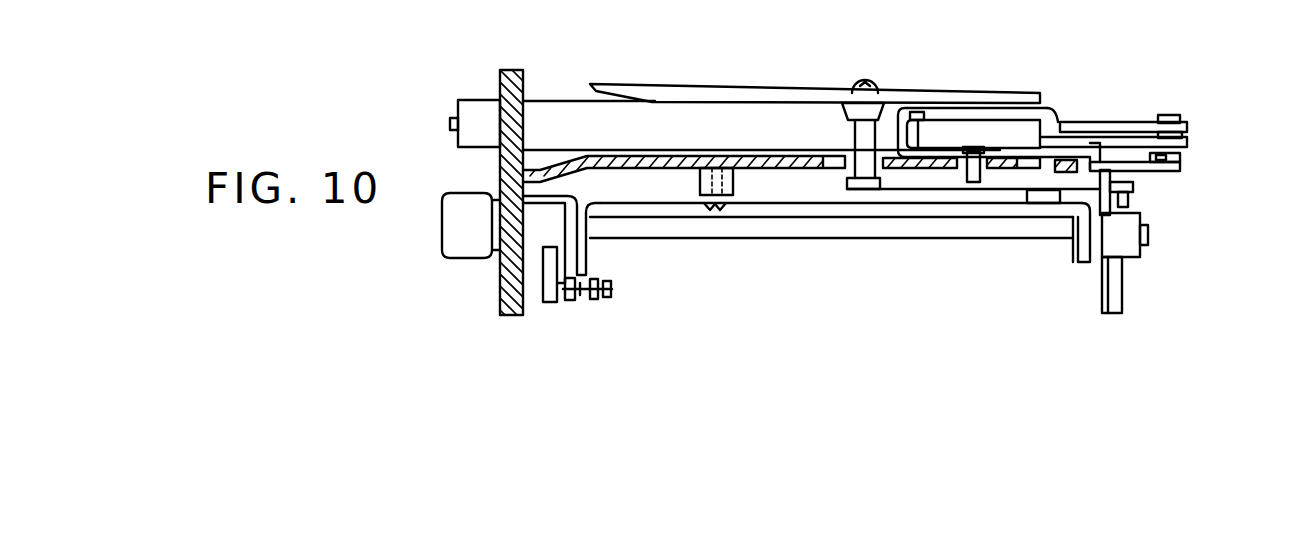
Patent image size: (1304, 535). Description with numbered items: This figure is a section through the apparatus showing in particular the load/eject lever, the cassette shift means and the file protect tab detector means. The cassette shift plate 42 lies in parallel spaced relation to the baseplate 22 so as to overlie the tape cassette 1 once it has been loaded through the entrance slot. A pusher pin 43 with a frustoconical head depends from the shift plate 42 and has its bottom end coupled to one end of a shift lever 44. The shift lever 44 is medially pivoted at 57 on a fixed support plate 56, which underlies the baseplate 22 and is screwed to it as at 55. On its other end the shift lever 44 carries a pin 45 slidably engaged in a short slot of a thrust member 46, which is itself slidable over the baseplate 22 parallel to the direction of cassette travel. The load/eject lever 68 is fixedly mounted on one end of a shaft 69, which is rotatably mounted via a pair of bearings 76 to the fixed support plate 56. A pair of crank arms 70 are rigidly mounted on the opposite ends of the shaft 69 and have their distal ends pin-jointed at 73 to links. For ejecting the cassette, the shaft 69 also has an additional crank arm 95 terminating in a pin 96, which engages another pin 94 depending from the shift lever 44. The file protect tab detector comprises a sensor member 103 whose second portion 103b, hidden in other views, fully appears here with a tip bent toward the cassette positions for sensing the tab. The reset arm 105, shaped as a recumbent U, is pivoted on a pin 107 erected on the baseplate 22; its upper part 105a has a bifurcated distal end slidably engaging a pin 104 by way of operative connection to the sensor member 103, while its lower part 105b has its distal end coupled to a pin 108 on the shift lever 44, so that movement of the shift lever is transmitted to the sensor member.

The tape cassette 1 is at (463, 96).
The baseplate 22 is at (588, 156).
The cassette shift plate 42 is at (690, 84).
The pusher pin 43 is at (850, 110).
The shift lever 44 is at (908, 191).
The pin 45 is at (1186, 172).
The thrust member 46 is at (1184, 158).
The screw 55 is at (725, 210).
The fixed support plate 56 is at (817, 206).
The pivot 57 is at (1015, 186).
The load/eject lever 68 is at (466, 247).
The shaft 69 is at (652, 204).
The crank arms 70 is at (550, 303).
The pin joint 73 is at (610, 290).
The bearings 76 is at (584, 238).
The pin 94 is at (1130, 187).
The crank arm 95 is at (1074, 242).
The pin 96 is at (1142, 226).
The sensor member 103 is at (1196, 131).
The second portion 103b is at (1166, 115).
The pin 104 is at (1180, 112).
The reset arm 105 is at (1066, 118).
The upper part 105a is at (1100, 122).
The lower part 105b is at (938, 152).
The pin 107 is at (916, 112).
The pin 108 is at (970, 148).